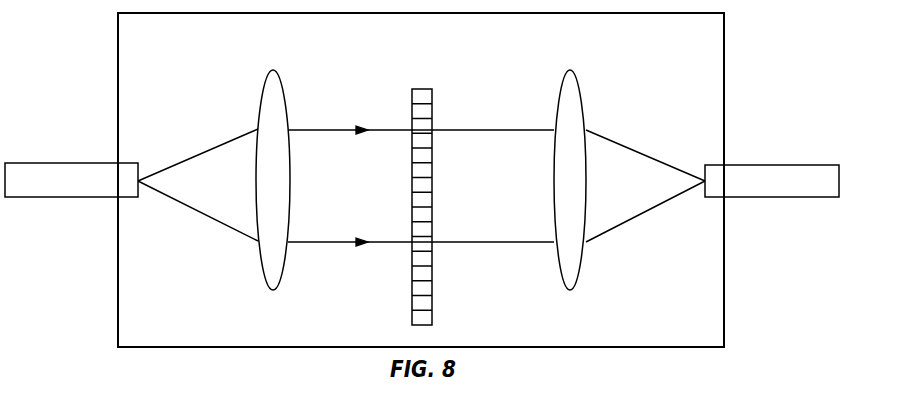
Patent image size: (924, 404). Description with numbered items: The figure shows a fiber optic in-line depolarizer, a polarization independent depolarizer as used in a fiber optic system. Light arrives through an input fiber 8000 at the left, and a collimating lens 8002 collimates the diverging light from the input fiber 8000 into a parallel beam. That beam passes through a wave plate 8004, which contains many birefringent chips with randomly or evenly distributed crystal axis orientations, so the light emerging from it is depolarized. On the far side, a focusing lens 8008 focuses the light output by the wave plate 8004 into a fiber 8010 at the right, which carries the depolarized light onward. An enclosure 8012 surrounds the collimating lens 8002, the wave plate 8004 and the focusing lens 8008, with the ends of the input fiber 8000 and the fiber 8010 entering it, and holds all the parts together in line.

The input fiber 8000 is at (103, 163).
The collimating lens 8002 is at (273, 70).
The wave plate 8004 is at (423, 89).
The focusing lens 8008 is at (570, 70).
The fiber 8010 is at (748, 165).
The enclosure 8012 is at (628, 347).